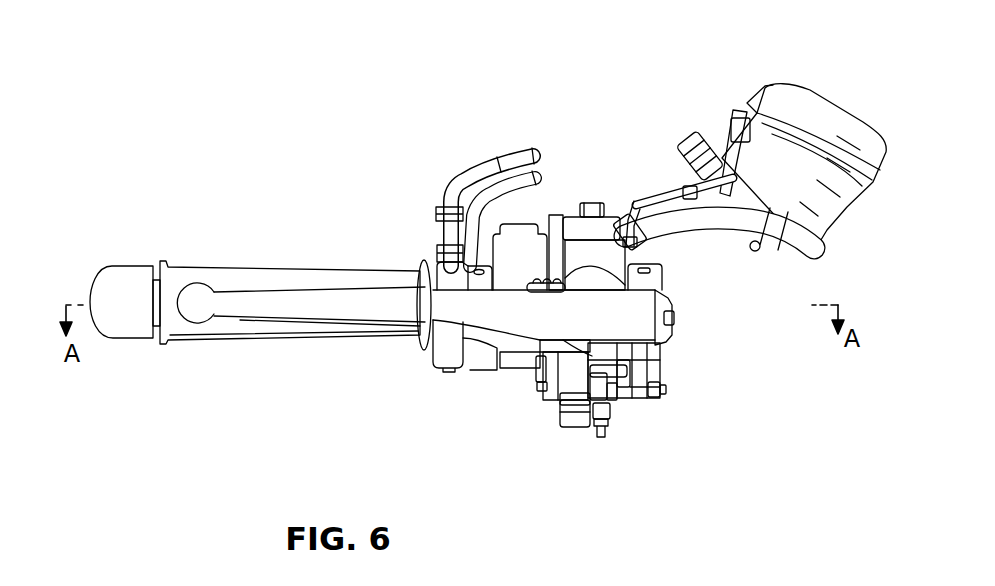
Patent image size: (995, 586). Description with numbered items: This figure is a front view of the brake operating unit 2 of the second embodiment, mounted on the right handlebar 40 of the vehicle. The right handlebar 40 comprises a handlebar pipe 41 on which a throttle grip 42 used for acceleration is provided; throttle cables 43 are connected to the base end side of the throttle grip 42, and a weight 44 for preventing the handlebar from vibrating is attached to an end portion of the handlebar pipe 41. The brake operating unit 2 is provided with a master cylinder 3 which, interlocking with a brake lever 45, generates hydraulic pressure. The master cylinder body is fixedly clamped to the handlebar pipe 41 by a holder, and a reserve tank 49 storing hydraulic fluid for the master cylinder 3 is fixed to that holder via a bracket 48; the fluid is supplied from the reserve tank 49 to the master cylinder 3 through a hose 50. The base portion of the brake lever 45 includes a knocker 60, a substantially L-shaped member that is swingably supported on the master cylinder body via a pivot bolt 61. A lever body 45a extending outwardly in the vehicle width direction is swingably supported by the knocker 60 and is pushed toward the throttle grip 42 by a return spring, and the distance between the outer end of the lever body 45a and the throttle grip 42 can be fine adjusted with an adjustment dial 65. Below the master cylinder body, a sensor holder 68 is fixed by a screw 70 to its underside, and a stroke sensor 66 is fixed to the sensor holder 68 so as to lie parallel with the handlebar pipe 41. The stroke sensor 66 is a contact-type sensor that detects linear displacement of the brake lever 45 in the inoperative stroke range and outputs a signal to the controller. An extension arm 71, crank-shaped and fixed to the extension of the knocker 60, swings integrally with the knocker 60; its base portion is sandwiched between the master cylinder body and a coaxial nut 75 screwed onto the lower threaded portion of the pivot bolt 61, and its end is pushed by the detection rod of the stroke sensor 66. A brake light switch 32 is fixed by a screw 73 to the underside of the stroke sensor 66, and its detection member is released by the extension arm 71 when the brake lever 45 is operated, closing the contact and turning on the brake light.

The brake operating unit 2 is at (399, 272).
The master cylinder 3 is at (543, 375).
The brake light switch 32 is at (575, 427).
The right handlebar 40 is at (558, 85).
The handlebar pipe 41 is at (553, 280).
The throttle grip 42 is at (230, 275).
The throttle cables 43 is at (492, 192).
The weight 44 is at (124, 270).
The brake lever 45 is at (296, 276).
The lever body 45a is at (335, 320).
The bracket 48 is at (648, 188).
The reserve tank 49 is at (806, 95).
The hose 50 is at (704, 234).
The knocker 60 is at (662, 305).
The pivot bolt 61 is at (652, 273).
The adjustment dial 65 is at (531, 283).
The stroke sensor 66 is at (567, 410).
The sensor holder 68 is at (572, 380).
The screw 70 is at (608, 392).
The extension arm 71 is at (660, 373).
The screw 73 is at (612, 424).
The coaxial nut 75 is at (655, 395).